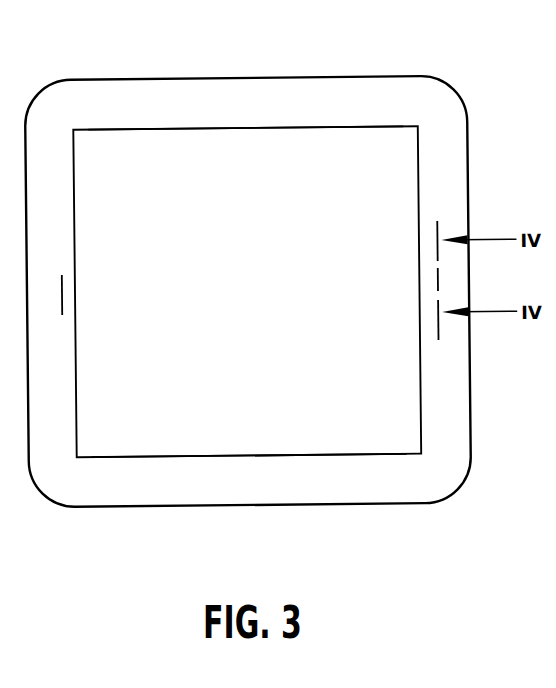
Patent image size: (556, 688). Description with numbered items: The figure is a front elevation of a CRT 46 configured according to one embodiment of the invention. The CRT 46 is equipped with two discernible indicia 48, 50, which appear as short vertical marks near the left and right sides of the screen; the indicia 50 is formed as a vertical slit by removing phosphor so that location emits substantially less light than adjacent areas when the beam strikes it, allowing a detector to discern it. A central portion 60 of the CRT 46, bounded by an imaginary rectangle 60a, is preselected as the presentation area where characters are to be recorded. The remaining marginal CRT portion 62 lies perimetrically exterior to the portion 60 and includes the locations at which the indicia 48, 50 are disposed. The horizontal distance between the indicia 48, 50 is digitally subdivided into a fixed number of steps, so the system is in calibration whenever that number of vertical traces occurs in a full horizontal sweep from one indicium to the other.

The CRT 46 is at (387, 69).
The indicia 48 is at (62, 292).
The indicia 50 is at (438, 285).
The portion 60 is at (253, 280).
The imaginary rectangle 60a is at (255, 128).
The marginal CRT portion 62 is at (255, 488).